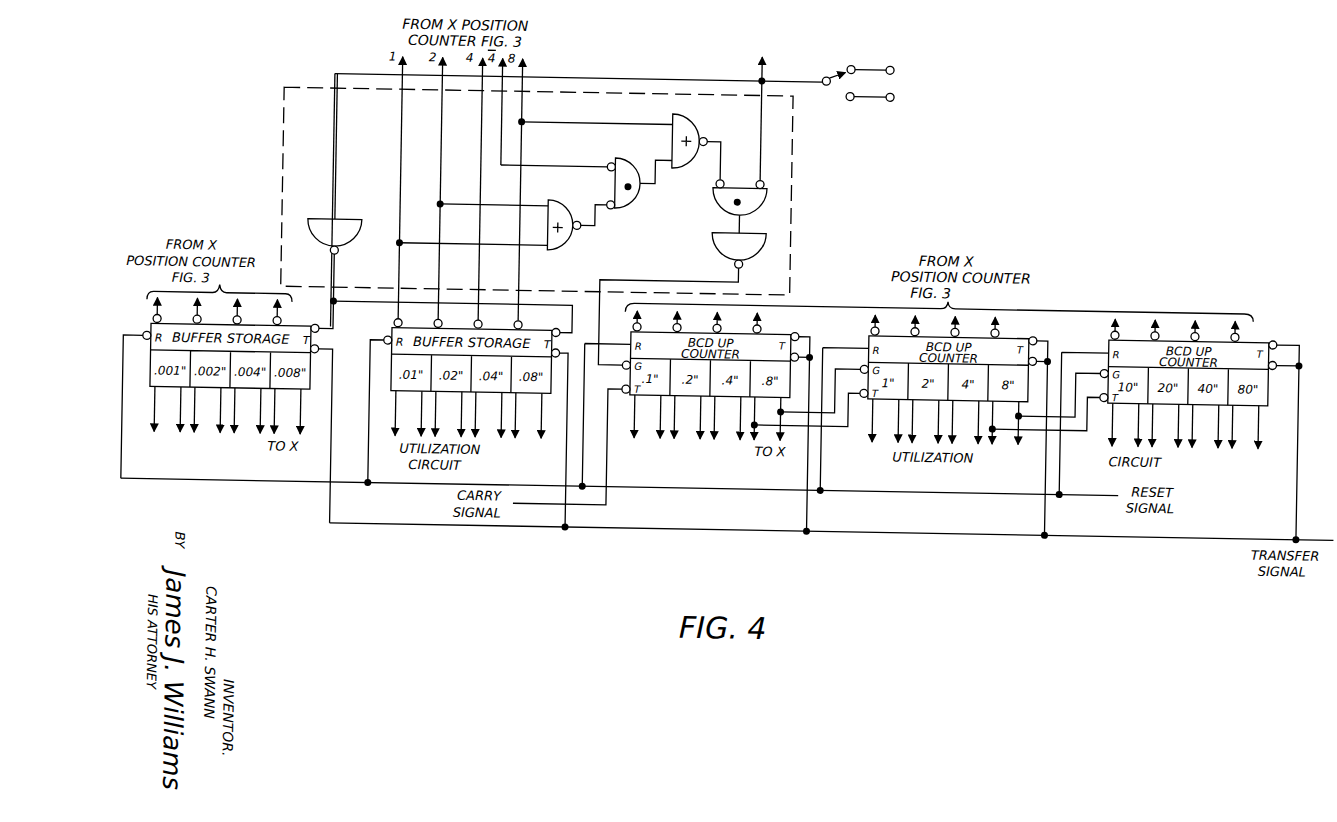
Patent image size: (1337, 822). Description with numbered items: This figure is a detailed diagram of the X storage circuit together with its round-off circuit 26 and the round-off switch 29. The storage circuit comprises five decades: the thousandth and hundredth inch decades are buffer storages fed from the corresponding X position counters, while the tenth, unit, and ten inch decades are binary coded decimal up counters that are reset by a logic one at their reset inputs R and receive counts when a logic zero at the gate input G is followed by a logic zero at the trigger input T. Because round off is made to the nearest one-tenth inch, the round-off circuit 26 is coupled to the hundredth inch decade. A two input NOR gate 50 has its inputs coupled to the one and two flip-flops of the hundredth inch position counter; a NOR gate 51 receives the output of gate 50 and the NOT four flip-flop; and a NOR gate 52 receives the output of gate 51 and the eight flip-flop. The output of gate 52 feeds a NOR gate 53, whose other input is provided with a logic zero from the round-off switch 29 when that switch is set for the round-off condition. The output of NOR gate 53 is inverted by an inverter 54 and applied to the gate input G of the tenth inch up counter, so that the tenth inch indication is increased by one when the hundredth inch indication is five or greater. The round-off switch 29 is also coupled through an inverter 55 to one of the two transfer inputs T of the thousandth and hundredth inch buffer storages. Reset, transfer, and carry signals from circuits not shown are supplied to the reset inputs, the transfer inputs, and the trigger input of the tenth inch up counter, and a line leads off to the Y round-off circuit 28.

The round-off circuit 26 is at (795, 194).
The Y round-off circuit 28 is at (774, 98).
The round-off switch 29 is at (825, 69).
The two input NOR gate 50 is at (565, 207).
The two input NOR gate 51 is at (622, 156).
The two input NOR gate 52 is at (697, 127).
The two input NOR gate 53 is at (764, 186).
The inverter 54 is at (766, 232).
The inverter 55 is at (358, 225).